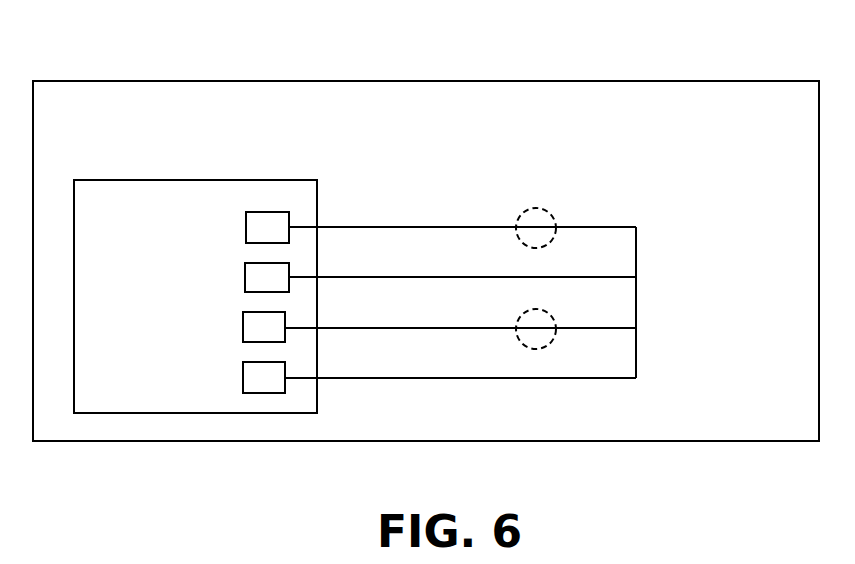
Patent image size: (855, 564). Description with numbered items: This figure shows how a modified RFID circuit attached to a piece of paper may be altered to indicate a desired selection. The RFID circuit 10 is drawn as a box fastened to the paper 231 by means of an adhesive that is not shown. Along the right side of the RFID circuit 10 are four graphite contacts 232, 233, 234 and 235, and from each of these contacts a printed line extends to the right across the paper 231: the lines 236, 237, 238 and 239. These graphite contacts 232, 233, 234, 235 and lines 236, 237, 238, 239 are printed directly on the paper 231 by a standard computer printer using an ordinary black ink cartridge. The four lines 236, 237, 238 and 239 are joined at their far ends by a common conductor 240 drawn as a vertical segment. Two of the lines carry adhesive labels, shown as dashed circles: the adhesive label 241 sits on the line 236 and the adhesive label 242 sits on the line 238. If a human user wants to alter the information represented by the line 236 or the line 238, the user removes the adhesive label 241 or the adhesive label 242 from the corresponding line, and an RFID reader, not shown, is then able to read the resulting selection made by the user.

The paper 231 is at (648, 80).
The RFID circuit 10 is at (153, 180).
The graphite contact 232 is at (246, 237).
The graphite contact 233 is at (245, 287).
The graphite contact 234 is at (243, 332).
The graphite contact 235 is at (243, 385).
The line 236 is at (397, 224).
The line 237 is at (397, 274).
The line 238 is at (405, 326).
The line 239 is at (407, 376).
The common bus conductor 240 is at (636, 352).
The adhesive label 241 is at (540, 207).
The adhesive label 242 is at (540, 310).